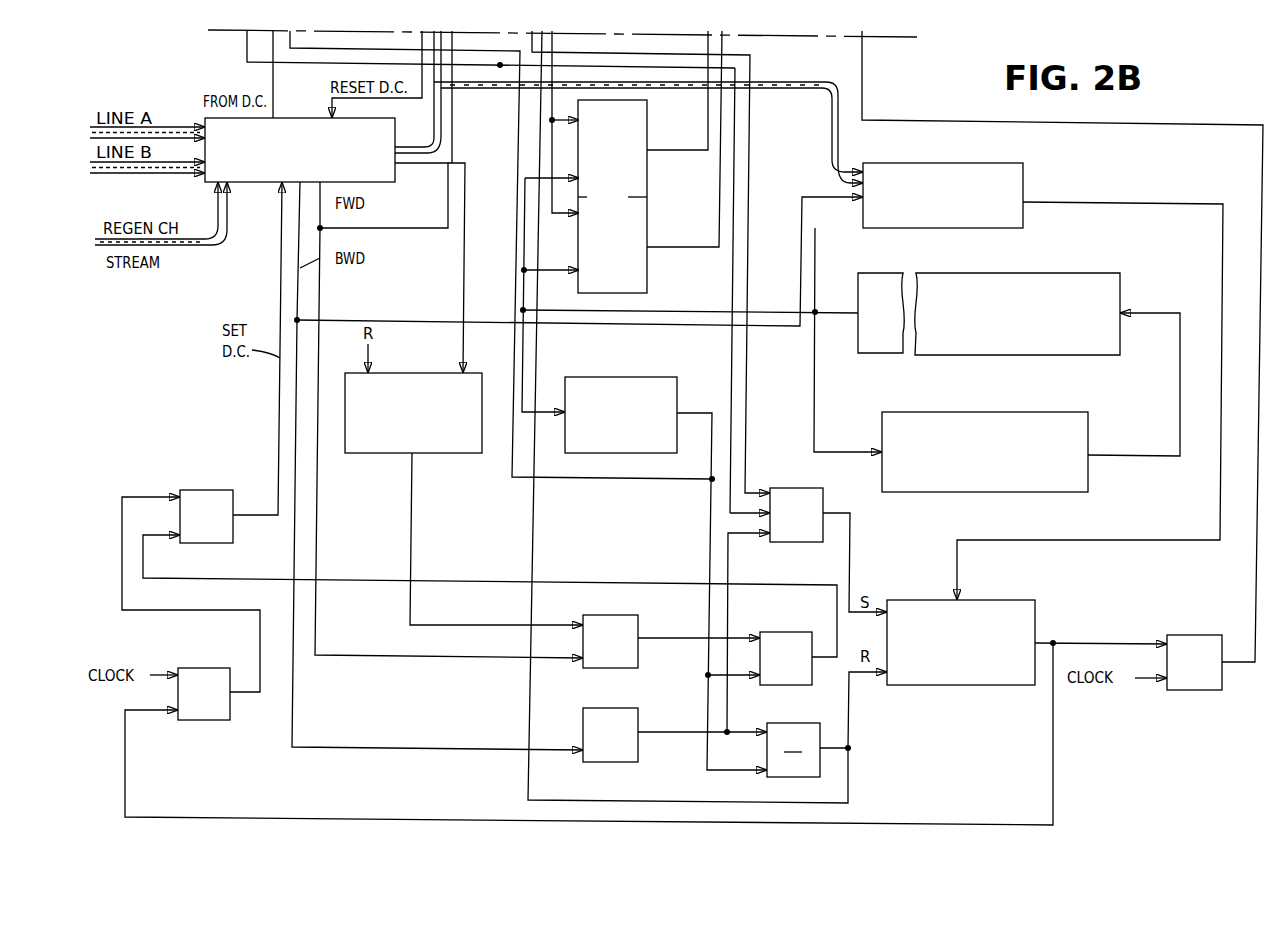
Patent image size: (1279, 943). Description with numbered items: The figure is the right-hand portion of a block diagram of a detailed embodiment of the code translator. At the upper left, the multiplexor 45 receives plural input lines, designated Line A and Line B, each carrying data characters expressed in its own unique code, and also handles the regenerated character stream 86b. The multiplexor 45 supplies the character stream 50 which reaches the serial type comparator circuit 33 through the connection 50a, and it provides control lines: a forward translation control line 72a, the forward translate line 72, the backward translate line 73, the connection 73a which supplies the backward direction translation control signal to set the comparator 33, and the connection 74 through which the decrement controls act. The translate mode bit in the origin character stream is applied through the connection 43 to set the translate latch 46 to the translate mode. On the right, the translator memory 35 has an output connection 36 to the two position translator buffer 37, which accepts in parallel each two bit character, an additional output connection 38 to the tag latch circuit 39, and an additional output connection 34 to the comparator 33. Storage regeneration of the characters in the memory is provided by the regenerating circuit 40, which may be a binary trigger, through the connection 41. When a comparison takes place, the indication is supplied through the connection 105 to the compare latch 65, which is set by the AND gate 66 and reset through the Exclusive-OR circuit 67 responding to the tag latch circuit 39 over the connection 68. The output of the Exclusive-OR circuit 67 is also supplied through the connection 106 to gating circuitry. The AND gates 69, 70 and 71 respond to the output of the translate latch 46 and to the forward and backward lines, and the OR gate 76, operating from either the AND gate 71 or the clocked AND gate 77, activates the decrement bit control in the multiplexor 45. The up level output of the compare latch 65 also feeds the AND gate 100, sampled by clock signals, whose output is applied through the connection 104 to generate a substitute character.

The connection 74 is at (273, 72).
The multiplexor 45 is at (264, 178).
The regenerated character stream 86b is at (198, 248).
The character stream 50 is at (433, 118).
The connection 50a is at (783, 84).
The connection 104 is at (1173, 122).
The forward translation control line 72a is at (374, 228).
The connection 43 is at (463, 250).
The translator buffer 37 is at (650, 268).
The output connection 38 is at (523, 347).
The output connection 36 is at (708, 309).
The connection 73a is at (386, 318).
The output connection 34 is at (818, 263).
The comparator circuit 33 is at (965, 228).
The translator memory 35 is at (1058, 282).
The connection 41 is at (1121, 456).
The regenerating circuit 40 is at (990, 492).
The connection 105 is at (1165, 543).
The compare latch 65 is at (987, 602).
The AND gate 100 is at (1208, 690).
The translate latch 46 is at (385, 453).
The tag latch circuit 39 is at (640, 375).
The connection 68 is at (711, 522).
The connection 106 is at (532, 528).
The OR gate 76 is at (214, 488).
The forward translate line 72 is at (318, 514).
The backward translate line 73 is at (292, 557).
The AND gate 66 is at (793, 488).
The AND gate 69 is at (645, 625).
The AND gate 71 is at (776, 632).
The Exclusive-OR circuit 67 is at (800, 724).
The AND gate 70 is at (638, 758).
The clocked AND gate 77 is at (201, 720).